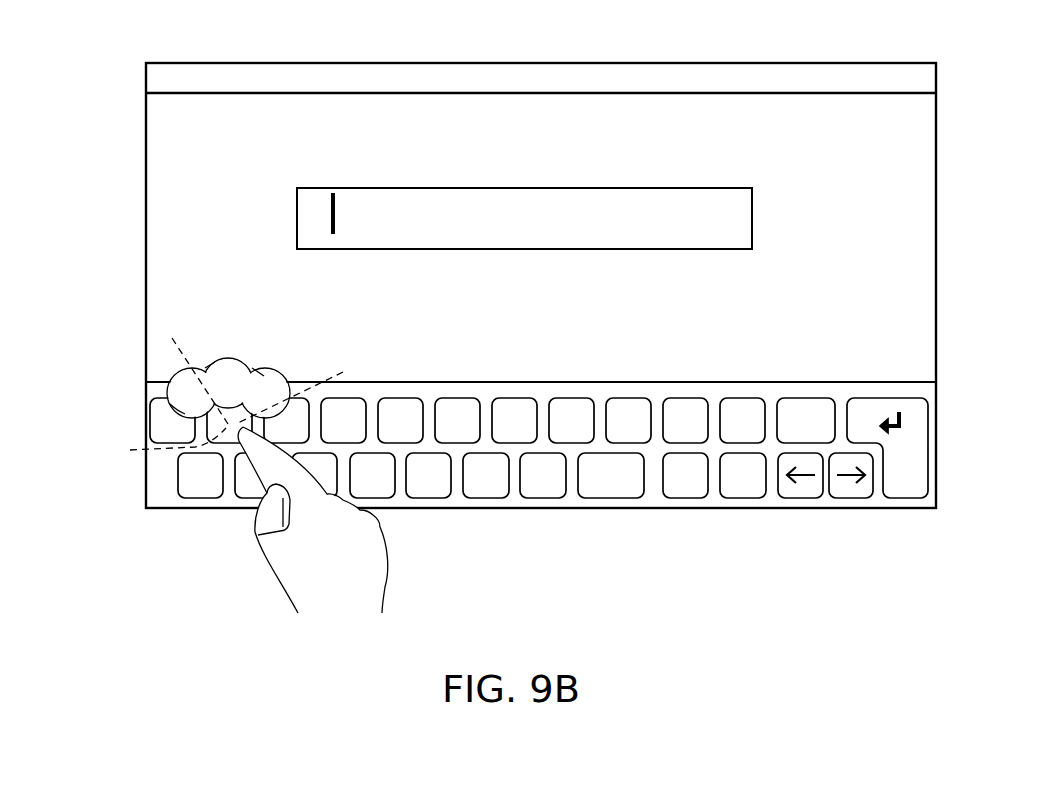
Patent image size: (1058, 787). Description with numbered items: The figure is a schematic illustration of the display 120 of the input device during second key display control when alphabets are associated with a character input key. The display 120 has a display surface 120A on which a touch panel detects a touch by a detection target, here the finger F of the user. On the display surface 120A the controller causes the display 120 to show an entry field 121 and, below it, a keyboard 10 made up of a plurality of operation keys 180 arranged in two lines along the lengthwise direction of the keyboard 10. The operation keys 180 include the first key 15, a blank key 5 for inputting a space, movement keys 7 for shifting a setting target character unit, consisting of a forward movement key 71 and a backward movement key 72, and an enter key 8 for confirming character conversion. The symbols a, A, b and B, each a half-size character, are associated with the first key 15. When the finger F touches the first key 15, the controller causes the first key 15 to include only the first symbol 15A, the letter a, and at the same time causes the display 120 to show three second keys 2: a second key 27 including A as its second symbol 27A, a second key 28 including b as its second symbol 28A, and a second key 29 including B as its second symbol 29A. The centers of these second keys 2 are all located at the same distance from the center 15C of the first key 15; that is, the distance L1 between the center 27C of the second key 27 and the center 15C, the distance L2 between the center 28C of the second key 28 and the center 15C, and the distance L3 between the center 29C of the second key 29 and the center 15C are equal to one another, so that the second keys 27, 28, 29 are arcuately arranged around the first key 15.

The display 120 is at (278, 63).
The display surface 120A is at (345, 118).
The entry field 121 is at (297, 205).
The keyboard 10 is at (842, 382).
The second key 2 is at (229, 348).
The second key 27 is at (192, 393).
The second symbol 27A is at (170, 404).
The center of the second key 27C is at (170, 390).
The second key 28 is at (228, 383).
The second symbol 28A is at (205, 368).
The center of the second key 28C is at (228, 372).
The second key 29 is at (265, 393).
The second symbol 29A is at (264, 376).
The center of the second key 29C is at (284, 388).
The distance L1 is at (160, 448).
The distance L2 is at (190, 364).
The distance L3 is at (304, 388).
The first key 15 is at (168, 493).
The first symbol 15A is at (231, 422).
The center of the first key 15C is at (220, 431).
The finger F is at (246, 490).
The blank key 5 is at (605, 498).
The movement keys 7 is at (825, 539).
The forward movement key 71 is at (793, 498).
The backward movement key 72 is at (862, 498).
The enter key 8 is at (907, 493).
The operation keys 180 is at (490, 575).